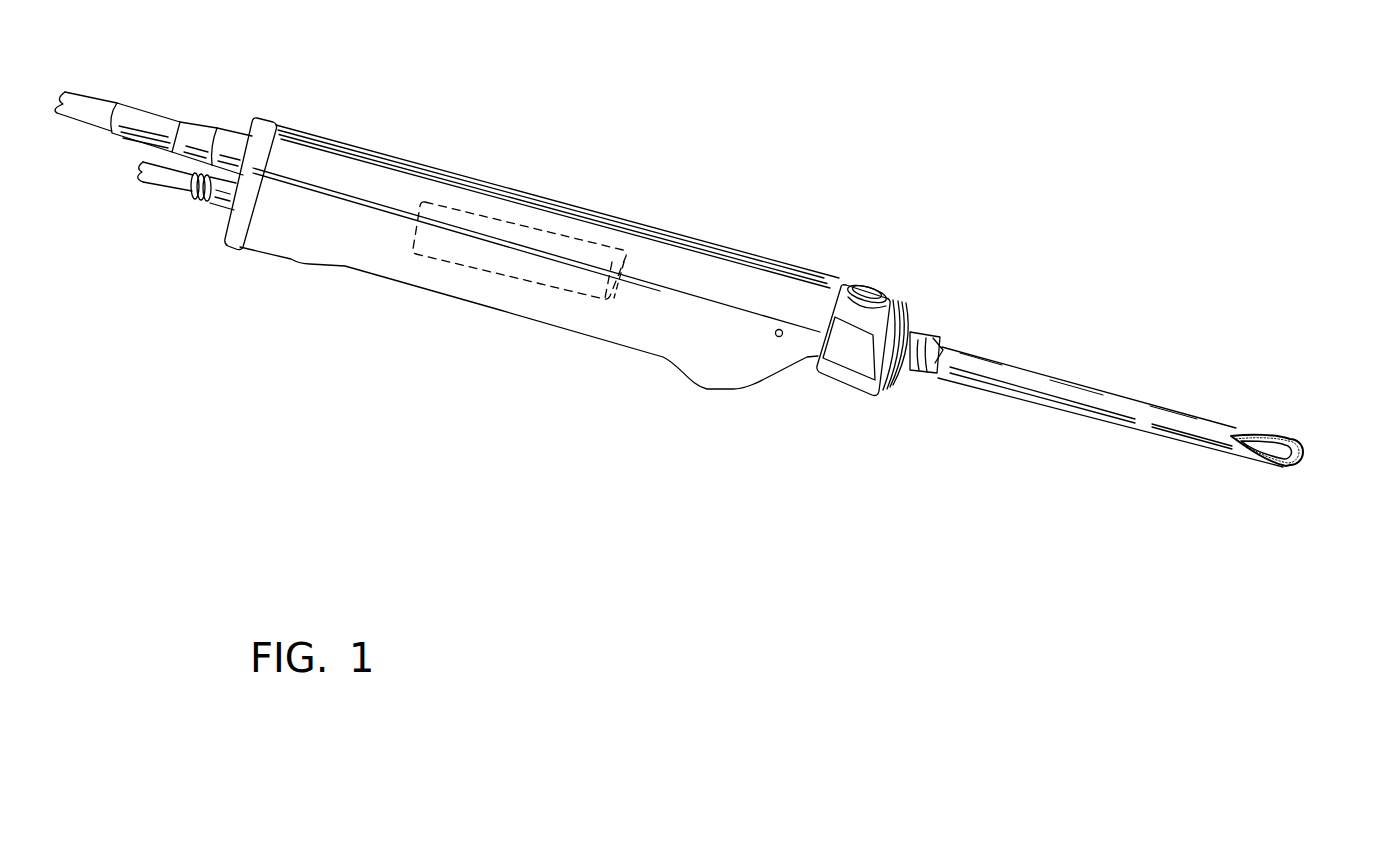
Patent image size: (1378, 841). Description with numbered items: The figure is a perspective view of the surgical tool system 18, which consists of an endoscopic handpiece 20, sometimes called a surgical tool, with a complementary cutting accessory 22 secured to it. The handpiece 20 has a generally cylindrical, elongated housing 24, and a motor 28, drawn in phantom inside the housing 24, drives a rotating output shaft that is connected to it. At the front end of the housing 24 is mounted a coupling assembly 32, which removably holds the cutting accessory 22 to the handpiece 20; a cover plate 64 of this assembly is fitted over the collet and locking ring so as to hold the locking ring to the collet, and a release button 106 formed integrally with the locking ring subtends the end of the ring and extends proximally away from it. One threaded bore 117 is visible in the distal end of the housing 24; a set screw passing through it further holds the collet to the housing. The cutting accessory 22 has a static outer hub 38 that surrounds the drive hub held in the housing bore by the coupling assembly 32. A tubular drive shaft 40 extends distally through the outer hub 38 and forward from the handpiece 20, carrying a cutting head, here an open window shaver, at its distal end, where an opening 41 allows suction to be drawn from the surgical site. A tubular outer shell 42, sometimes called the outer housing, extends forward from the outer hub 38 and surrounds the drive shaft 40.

The surgical tool system 18 is at (880, 432).
The endoscopic handpiece 20 is at (490, 160).
The cutting accessory 22 is at (1018, 390).
The housing 24 is at (300, 248).
The motor 28 is at (503, 258).
The coupling assembly 32 is at (930, 282).
The outer hub 38 is at (933, 345).
The drive shaft 40 is at (1262, 460).
The opening 41 is at (1278, 455).
The outer shell 42 is at (1072, 382).
The cover plate 64 is at (862, 365).
The release button 106 is at (868, 289).
The threaded bore 117 is at (778, 340).